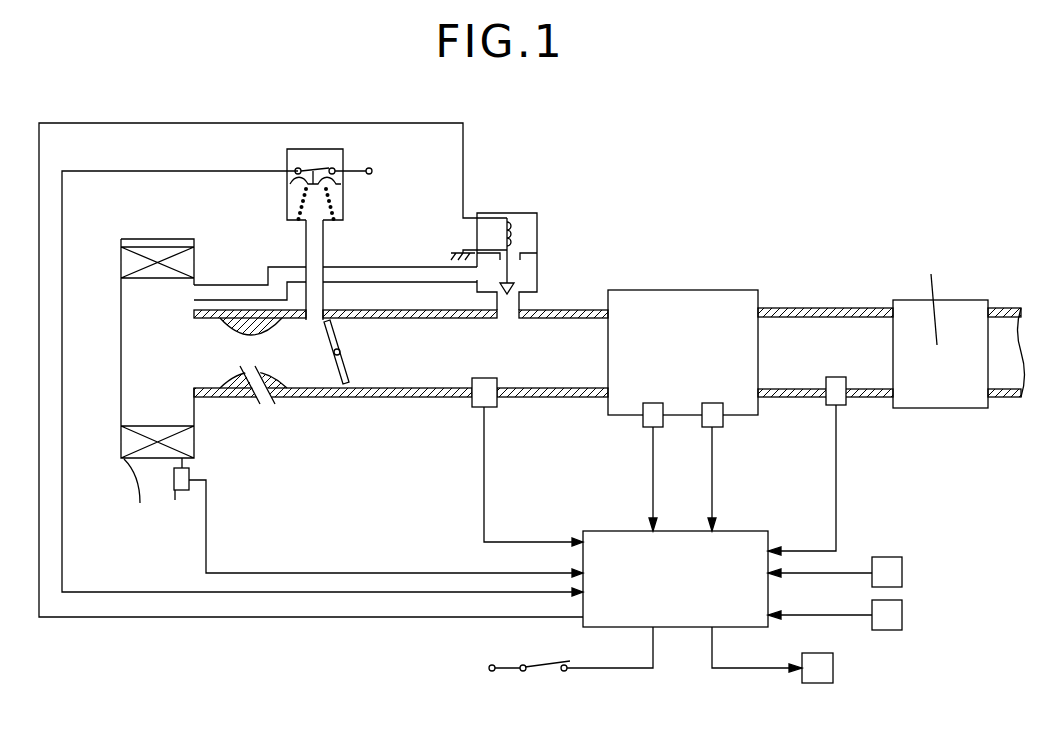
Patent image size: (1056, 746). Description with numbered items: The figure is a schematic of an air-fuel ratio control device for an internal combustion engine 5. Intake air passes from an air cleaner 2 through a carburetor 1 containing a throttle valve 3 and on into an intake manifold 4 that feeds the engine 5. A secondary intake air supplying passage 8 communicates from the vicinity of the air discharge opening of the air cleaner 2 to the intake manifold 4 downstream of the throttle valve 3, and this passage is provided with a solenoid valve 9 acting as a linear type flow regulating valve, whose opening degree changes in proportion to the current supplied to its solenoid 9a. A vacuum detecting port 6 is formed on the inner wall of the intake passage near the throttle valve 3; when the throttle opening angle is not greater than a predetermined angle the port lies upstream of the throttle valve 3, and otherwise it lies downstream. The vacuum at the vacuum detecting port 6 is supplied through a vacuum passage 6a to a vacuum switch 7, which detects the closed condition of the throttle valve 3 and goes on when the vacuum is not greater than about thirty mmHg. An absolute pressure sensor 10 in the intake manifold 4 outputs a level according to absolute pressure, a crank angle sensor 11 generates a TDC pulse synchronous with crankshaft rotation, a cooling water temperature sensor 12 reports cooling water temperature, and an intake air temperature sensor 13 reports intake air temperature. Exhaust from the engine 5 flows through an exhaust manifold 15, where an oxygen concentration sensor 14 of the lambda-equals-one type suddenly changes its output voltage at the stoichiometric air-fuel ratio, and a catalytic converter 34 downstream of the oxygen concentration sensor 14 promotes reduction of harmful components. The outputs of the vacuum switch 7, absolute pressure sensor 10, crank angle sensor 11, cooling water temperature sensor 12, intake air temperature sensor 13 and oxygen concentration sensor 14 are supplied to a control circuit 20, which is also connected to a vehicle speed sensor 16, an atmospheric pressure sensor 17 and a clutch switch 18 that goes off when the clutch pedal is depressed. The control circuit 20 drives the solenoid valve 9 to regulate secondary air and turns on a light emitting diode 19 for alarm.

The carburetor 1 is at (252, 297).
The air cleaner 2 is at (118, 443).
The throttle valve 3 is at (347, 366).
The intake manifold 4 is at (556, 310).
The internal combustion engine 5 is at (725, 290).
The vacuum detecting port 6 is at (312, 321).
The vacuum passage 6a is at (325, 241).
The vacuum switch 7 is at (345, 200).
The secondary intake air supplying passage 8 is at (410, 268).
The solenoid valve 9 is at (532, 232).
The solenoid 9a is at (512, 222).
The absolute pressure sensor 10 is at (498, 402).
The crank angle sensor 11 is at (640, 424).
The cooling water temperature sensor 12 is at (705, 426).
The intake air temperature sensor 13 is at (179, 502).
The oxygen concentration sensor 14 is at (848, 402).
The exhaust manifold 15 is at (846, 309).
The vehicle speed sensor 16 is at (904, 572).
The atmospheric pressure sensor 17 is at (904, 615).
The clutch switch 18 is at (548, 673).
The light emitting diode 19 is at (834, 666).
The control circuit 20 is at (748, 531).
The catalytic converter 34 is at (946, 409).